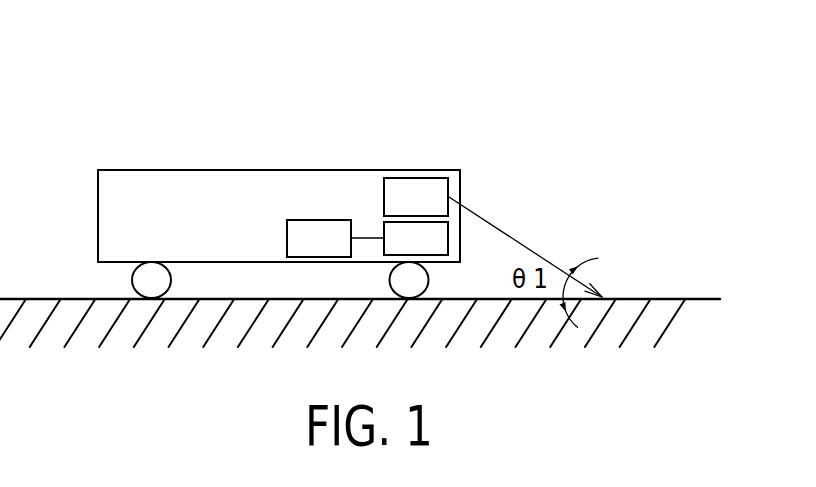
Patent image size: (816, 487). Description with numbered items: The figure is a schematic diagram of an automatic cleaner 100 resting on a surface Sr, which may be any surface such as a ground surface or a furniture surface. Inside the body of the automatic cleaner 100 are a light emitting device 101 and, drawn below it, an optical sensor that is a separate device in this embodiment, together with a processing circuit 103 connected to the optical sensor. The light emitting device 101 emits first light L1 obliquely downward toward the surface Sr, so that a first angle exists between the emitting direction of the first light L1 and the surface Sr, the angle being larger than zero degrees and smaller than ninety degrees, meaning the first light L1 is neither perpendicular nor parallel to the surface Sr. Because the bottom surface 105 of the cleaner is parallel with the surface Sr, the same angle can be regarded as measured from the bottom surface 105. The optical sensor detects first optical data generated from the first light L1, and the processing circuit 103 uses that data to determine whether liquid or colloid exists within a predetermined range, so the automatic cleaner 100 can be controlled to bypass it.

The automatic cleaner 100 is at (340, 152).
The light emitting device 101 is at (437, 208).
The processing circuit 103 is at (340, 250).
The bottom surface 105 is at (117, 262).
The surface Sr is at (672, 305).
The first light L1 is at (525, 247).